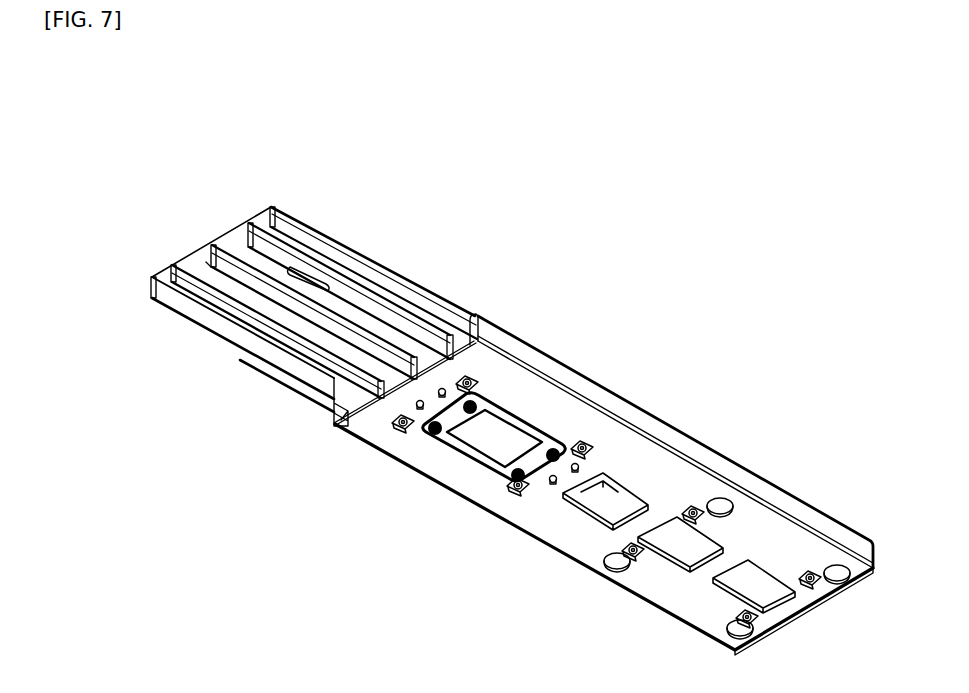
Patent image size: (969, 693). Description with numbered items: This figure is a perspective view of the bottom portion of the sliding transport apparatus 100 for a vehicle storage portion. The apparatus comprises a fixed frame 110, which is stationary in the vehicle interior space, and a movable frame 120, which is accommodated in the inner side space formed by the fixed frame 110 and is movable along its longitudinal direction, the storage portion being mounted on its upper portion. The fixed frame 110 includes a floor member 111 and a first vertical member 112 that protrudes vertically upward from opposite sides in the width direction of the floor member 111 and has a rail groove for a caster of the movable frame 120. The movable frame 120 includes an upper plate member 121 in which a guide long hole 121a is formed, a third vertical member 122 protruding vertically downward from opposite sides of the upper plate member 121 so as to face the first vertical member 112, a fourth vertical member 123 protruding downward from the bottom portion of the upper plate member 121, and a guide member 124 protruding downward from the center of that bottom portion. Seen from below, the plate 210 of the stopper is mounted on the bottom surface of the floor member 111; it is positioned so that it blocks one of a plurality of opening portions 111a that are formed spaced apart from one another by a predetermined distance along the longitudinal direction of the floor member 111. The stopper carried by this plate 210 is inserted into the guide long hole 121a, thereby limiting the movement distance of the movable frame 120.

The sliding transport apparatus 100 is at (598, 214).
The fixed frame 110 is at (672, 358).
The floor member 111 is at (573, 420).
The opening portions 111a is at (764, 586).
The first vertical member 112 is at (560, 367).
The movable frame 120 is at (302, 107).
The upper plate member 121 is at (228, 245).
The guide long hole 121a is at (320, 283).
The third vertical member 122 is at (298, 226).
The fourth vertical member 123 is at (262, 232).
The guide member 124 is at (195, 250).
The plate 210 is at (486, 445).